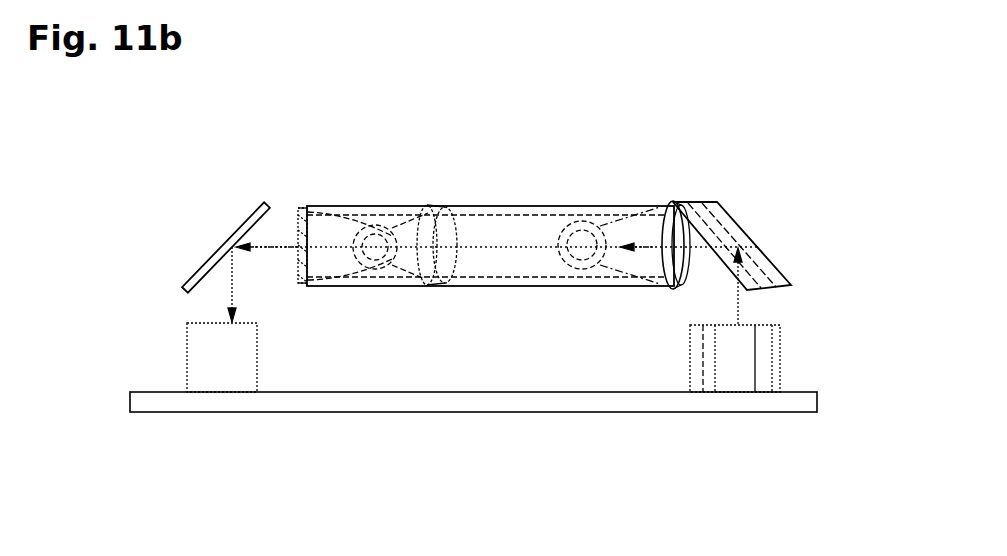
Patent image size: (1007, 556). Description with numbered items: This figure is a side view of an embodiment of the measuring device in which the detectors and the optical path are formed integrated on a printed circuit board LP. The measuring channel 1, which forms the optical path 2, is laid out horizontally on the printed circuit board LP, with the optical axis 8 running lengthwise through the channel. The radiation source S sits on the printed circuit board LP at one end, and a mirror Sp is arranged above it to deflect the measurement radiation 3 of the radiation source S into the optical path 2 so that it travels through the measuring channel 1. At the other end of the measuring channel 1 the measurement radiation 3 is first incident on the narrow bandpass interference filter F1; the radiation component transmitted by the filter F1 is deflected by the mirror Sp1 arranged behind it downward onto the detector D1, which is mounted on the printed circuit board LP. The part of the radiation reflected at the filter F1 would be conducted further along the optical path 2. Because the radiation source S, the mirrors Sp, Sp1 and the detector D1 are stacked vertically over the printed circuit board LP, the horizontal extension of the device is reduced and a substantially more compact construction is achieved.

The measuring channel 1 is at (513, 207).
The optical path 2 is at (458, 243).
The propagation direction of the measurement radiation 3 is at (737, 298).
The optical axis 8 is at (421, 240).
The filter 1 F1 is at (296, 213).
The mirror 1 Sp1 is at (237, 232).
The mirror Sp is at (757, 252).
The detector 1 D1 is at (210, 360).
The radiation source S is at (730, 355).
The printed circuit board LP is at (290, 400).